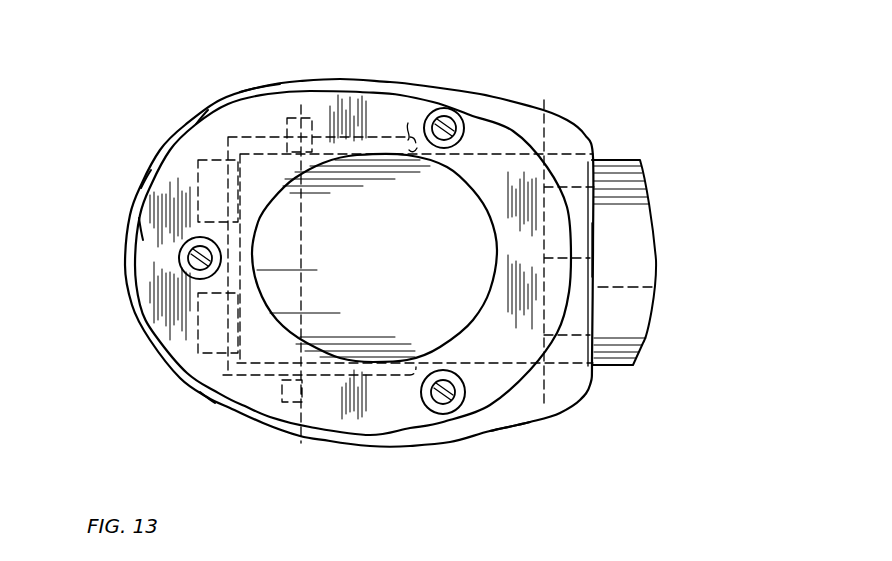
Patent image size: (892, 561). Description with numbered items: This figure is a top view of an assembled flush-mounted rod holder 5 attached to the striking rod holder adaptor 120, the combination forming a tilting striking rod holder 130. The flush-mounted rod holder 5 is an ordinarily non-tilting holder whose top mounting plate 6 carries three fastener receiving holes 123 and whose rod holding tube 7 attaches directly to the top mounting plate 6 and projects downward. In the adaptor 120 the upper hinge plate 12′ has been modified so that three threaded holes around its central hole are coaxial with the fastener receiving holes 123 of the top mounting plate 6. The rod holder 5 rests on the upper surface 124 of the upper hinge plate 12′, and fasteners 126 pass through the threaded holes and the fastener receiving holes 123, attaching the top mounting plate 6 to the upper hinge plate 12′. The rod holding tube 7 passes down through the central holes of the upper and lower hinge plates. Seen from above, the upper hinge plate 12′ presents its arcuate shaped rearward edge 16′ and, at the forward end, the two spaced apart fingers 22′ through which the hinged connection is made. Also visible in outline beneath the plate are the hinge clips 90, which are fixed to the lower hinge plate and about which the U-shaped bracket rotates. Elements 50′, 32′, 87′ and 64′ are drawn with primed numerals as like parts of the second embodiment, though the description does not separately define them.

The tilting striking rod holder 130 is at (150, 92).
The flush-mounted rod holder 5 is at (210, 123).
The top mounting plate 6 is at (208, 393).
The upper hinge plate 12′ is at (258, 80).
The arcuate shaped rearward edge 16′ is at (136, 225).
The seat side wall 50′ is at (143, 180).
The central opening 32′ is at (370, 156).
The internal channel 87′ is at (301, 105).
The fasteners 126 is at (446, 122).
The fastener receiving holes 123 is at (464, 126).
The striking rod holder adaptor 120 is at (540, 108).
The fingers 22′ is at (587, 133).
The rod holding tube 7 is at (640, 160).
The hinge section line 64′ is at (593, 223).
The hinge clips 90 is at (250, 212).
The upper surface 124 is at (528, 411).